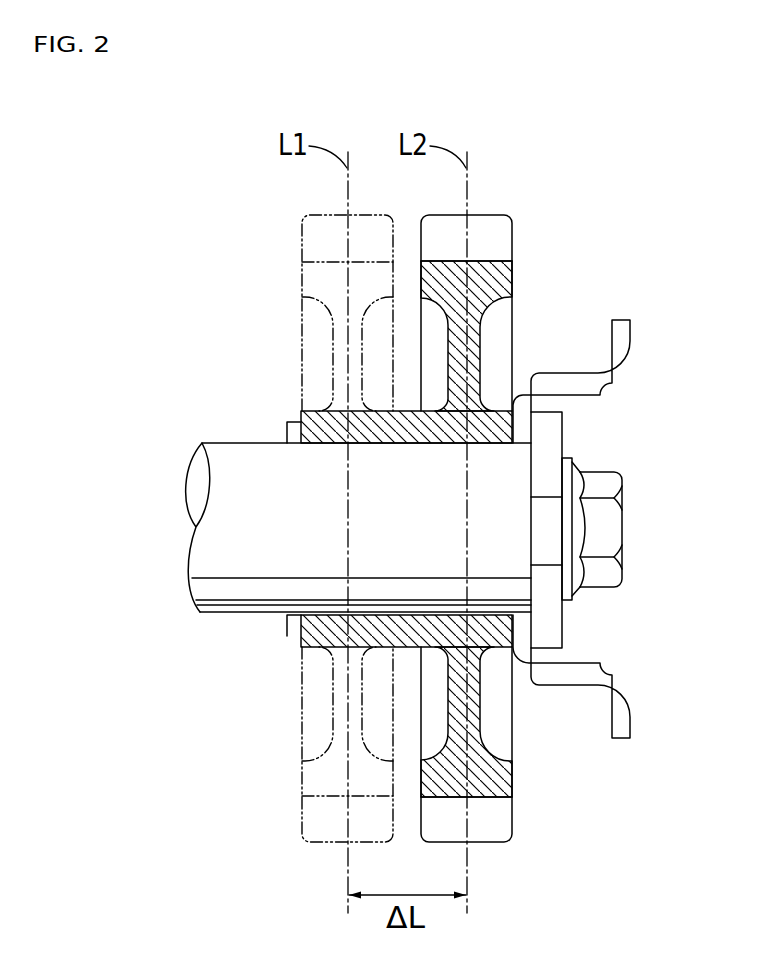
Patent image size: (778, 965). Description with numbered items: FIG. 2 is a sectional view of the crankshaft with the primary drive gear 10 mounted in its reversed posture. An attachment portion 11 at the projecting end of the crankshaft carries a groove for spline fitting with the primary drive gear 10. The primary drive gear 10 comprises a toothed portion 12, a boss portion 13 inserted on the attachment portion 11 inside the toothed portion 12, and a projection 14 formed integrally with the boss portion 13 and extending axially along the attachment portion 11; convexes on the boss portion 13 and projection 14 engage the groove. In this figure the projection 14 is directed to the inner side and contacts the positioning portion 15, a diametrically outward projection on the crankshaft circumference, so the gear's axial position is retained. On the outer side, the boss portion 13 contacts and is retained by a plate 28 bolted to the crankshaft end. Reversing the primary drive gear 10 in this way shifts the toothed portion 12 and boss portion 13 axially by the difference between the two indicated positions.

The primary drive gear 10 is at (292, 224).
The attachment portion 11 is at (252, 560).
The toothed portion 12 is at (487, 223).
The boss portion 13 is at (483, 427).
The projection 14 is at (335, 408).
The positioning portion 15 is at (285, 428).
The plate 28 is at (625, 348).